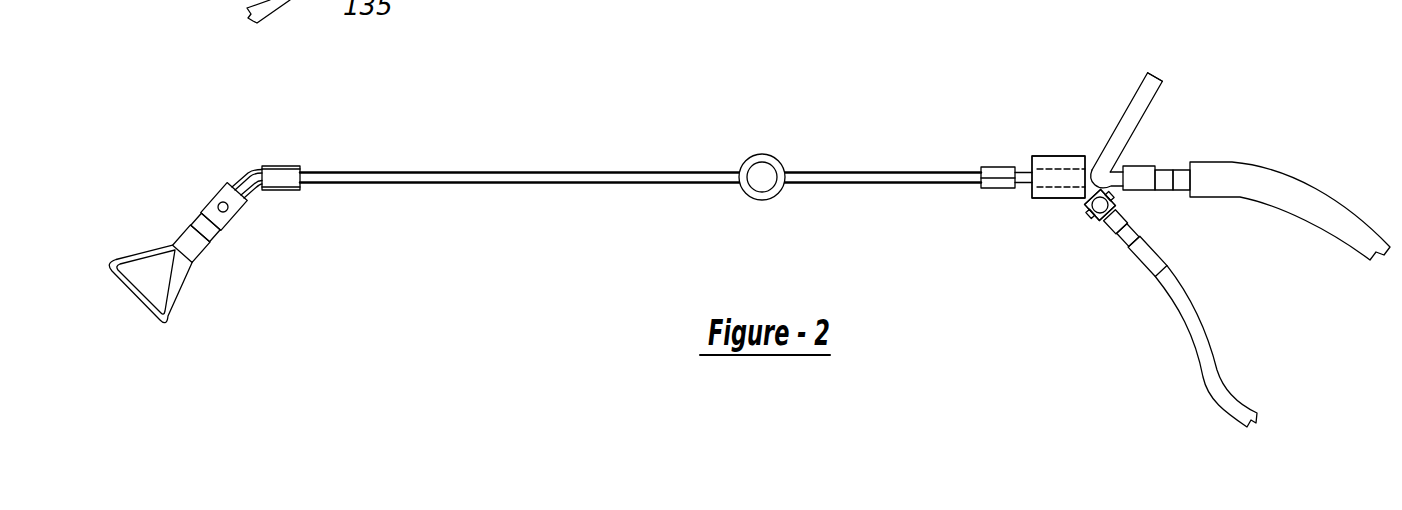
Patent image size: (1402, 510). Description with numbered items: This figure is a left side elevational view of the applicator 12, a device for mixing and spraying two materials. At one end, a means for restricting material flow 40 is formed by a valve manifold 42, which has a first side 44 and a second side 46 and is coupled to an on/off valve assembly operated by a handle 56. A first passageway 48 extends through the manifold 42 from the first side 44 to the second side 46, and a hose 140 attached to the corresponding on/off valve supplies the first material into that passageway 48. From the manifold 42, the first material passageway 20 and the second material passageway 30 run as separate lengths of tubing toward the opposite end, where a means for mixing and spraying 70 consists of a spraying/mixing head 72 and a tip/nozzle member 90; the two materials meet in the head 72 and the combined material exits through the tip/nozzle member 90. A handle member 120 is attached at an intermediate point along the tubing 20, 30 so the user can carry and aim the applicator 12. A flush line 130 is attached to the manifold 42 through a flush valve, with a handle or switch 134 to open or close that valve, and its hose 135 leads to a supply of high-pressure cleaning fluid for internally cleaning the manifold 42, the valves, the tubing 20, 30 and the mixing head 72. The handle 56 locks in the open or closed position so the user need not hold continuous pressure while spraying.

The applicator 12 is at (839, 80).
The first material passageway 20 is at (558, 184).
The second material passageway 30 is at (552, 171).
The means for restricting material flow 40 is at (1092, 108).
The valve manifold 42 is at (1055, 200).
The first side 44 is at (1088, 155).
The second side 46 is at (1033, 157).
The first passageway 48 is at (1043, 188).
The handle 56 is at (1158, 92).
The means for mixing and spraying 70 is at (244, 241).
The spraying/mixing head 72 is at (217, 187).
The tip/nozzle member 90 is at (141, 228).
The handle member 120 is at (757, 158).
The flush line 130 is at (1167, 225).
The handle or switch 134 is at (1090, 223).
The hose 135 is at (1208, 395).
The hose 140 is at (1348, 234).